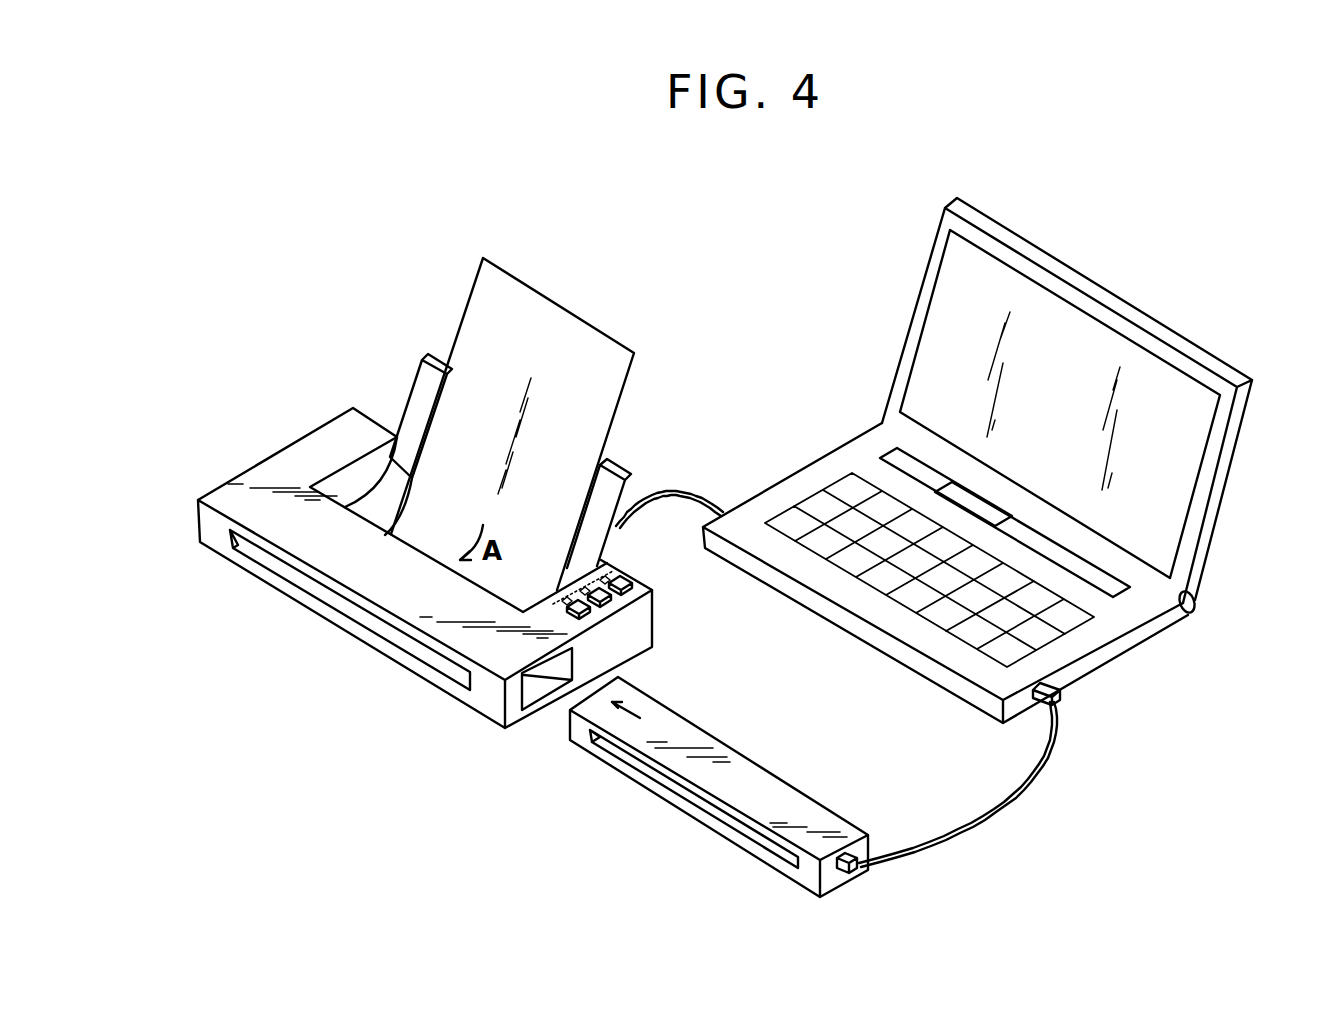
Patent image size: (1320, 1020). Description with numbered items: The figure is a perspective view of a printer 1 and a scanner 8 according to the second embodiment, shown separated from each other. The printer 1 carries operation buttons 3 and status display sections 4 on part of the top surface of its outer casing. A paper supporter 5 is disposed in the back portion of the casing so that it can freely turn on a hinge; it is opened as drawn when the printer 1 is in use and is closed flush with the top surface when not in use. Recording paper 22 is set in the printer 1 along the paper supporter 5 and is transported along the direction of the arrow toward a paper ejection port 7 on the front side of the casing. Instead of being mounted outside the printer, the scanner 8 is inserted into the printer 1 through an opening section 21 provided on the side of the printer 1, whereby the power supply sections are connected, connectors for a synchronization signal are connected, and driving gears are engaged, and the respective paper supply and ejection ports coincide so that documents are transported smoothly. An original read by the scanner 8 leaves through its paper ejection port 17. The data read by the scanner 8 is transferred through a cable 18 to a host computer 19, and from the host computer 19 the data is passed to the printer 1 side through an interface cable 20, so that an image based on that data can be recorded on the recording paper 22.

The printer 1 is at (332, 427).
The operation buttons 3 is at (628, 583).
The status display sections 4 is at (607, 575).
The paper supporter 5 is at (610, 473).
The paper ejection port 7 is at (410, 651).
The scanner 8 is at (795, 797).
The paper ejection port 17 is at (685, 798).
The cable 18 is at (1022, 798).
The host computer 19 is at (1143, 355).
The interface cable 20 is at (703, 488).
The opening section 21 is at (543, 695).
The recording paper 22 is at (613, 350).